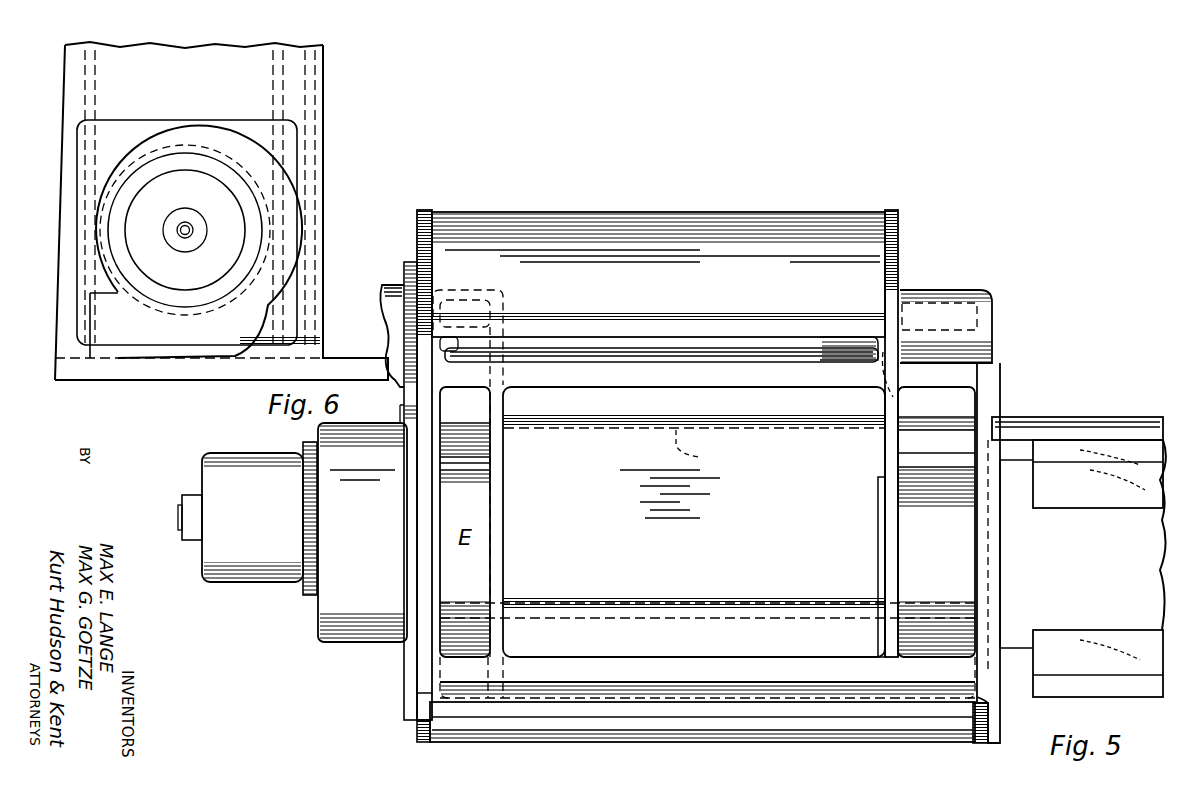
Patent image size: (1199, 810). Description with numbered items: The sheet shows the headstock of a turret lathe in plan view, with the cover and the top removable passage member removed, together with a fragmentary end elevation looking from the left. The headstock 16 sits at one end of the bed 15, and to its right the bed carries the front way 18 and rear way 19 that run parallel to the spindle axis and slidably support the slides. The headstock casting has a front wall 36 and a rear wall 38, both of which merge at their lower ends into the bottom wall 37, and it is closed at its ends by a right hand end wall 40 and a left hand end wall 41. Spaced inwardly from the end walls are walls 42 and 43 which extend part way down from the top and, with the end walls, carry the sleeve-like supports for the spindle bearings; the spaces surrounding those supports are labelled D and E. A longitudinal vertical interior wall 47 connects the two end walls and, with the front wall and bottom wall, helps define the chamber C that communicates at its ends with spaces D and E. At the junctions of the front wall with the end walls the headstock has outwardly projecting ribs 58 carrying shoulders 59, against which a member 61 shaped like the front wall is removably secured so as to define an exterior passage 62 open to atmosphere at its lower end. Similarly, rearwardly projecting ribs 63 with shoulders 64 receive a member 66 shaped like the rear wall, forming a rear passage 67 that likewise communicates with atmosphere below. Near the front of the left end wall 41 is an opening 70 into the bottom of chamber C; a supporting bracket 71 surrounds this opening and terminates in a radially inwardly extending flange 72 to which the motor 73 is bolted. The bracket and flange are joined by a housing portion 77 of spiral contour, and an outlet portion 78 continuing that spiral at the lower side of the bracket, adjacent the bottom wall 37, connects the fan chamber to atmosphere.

In FIG. 5, the bed 15 is at (1153, 548).
In FIG. 5, the headstock 16 is at (988, 313).
In FIG. 5, the front way 18 is at (1145, 668).
In FIG. 5, the rear way 19 is at (1160, 452).
In FIG. 6, the front wall 36 is at (280, 93).
In FIG. 5, the front wall 36 is at (652, 600).
In FIG. 6, the bottom wall 37 is at (197, 370).
In FIG. 5, the rear wall 38 is at (648, 372).
In FIG. 5, the right hand end wall 40 is at (990, 408).
In FIG. 5, the left hand end wall 41 is at (425, 658).
In FIG. 5, the wall 42 is at (888, 550).
In FIG. 5, the wall 43 is at (497, 535).
In FIG. 5, the vertical interior wall 47 is at (702, 448).
In FIG. 5, the ribs or flanges 58 is at (430, 693).
In FIG. 5, the shoulders 59 is at (425, 722).
In FIG. 5, the member 61 is at (590, 715).
In FIG. 5, the passage or space 62 is at (655, 690).
In FIG. 5, the flanges or ribs 63 is at (432, 347).
In FIG. 5, the shoulders 64 is at (452, 346).
In FIG. 5, the member 66 is at (656, 213).
In FIG. 5, the passage or space 67 is at (690, 352).
In FIG. 6, the opening 70 is at (253, 178).
In FIG. 5, the opening 70 is at (427, 597).
In FIG. 6, the supporting bracket 71 is at (253, 127).
In FIG. 5, the supporting bracket 71 is at (400, 412).
In FIG. 6, the radially inwardly extending flange 72 is at (118, 162).
In FIG. 5, the radially inwardly extending flange 72 is at (312, 598).
In FIG. 6, the motor 73 is at (183, 187).
In FIG. 5, the motor 73 is at (240, 517).
In FIG. 6, the housing portion 77 is at (267, 155).
In FIG. 5, the housing portion 77 is at (362, 532).
In FIG. 6, the outlet portion 78 is at (102, 335).